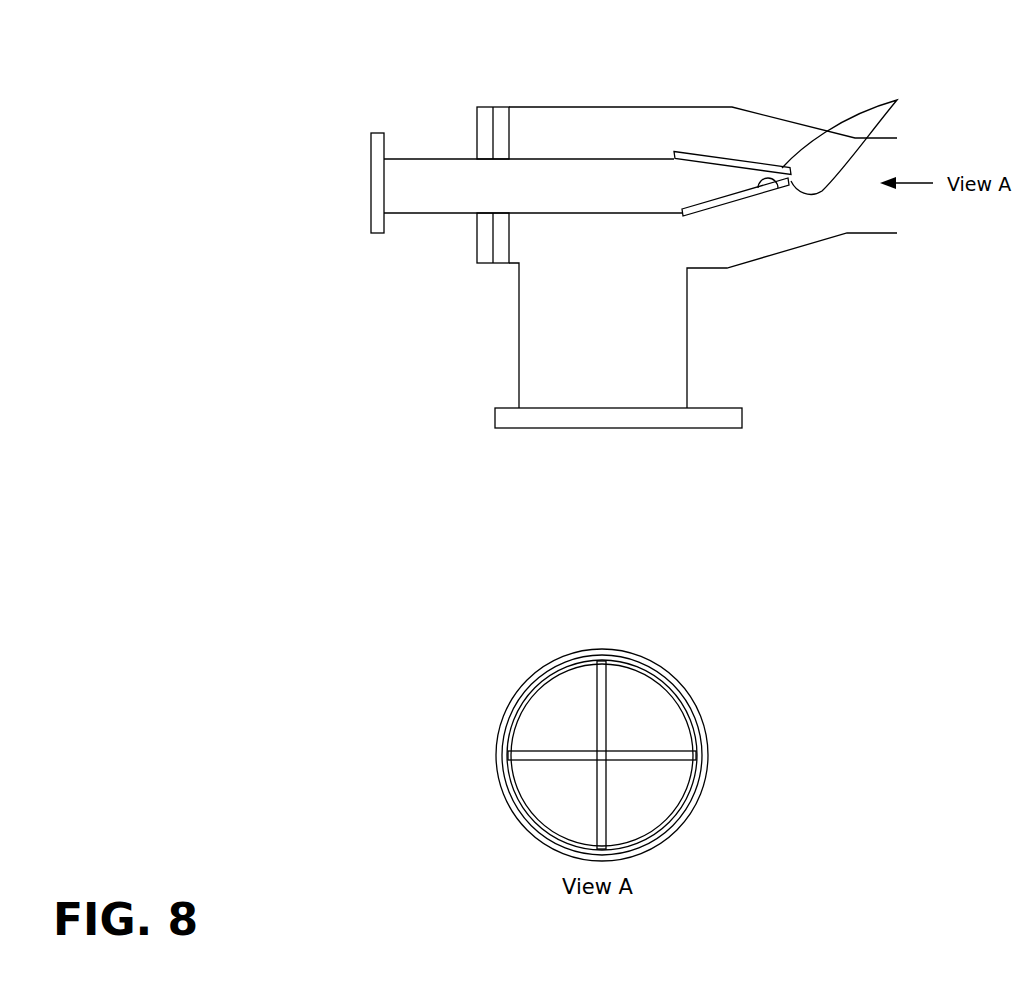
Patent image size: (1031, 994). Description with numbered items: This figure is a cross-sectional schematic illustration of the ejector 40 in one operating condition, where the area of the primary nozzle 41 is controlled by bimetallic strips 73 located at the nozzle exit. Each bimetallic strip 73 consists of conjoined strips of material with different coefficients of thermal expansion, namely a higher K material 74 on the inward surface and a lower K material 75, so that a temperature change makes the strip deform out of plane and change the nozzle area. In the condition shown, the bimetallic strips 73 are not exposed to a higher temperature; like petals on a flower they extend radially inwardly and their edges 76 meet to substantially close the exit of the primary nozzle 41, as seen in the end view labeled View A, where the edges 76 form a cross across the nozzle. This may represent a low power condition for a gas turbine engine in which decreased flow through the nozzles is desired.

The ejector 40 is at (826, 83).
The primary nozzle 41 is at (640, 213).
The bimetallic strips 73 is at (841, 138).
The higher K material 74 is at (780, 187).
The lower K material 75 is at (737, 202).
The edges 76 is at (607, 710).